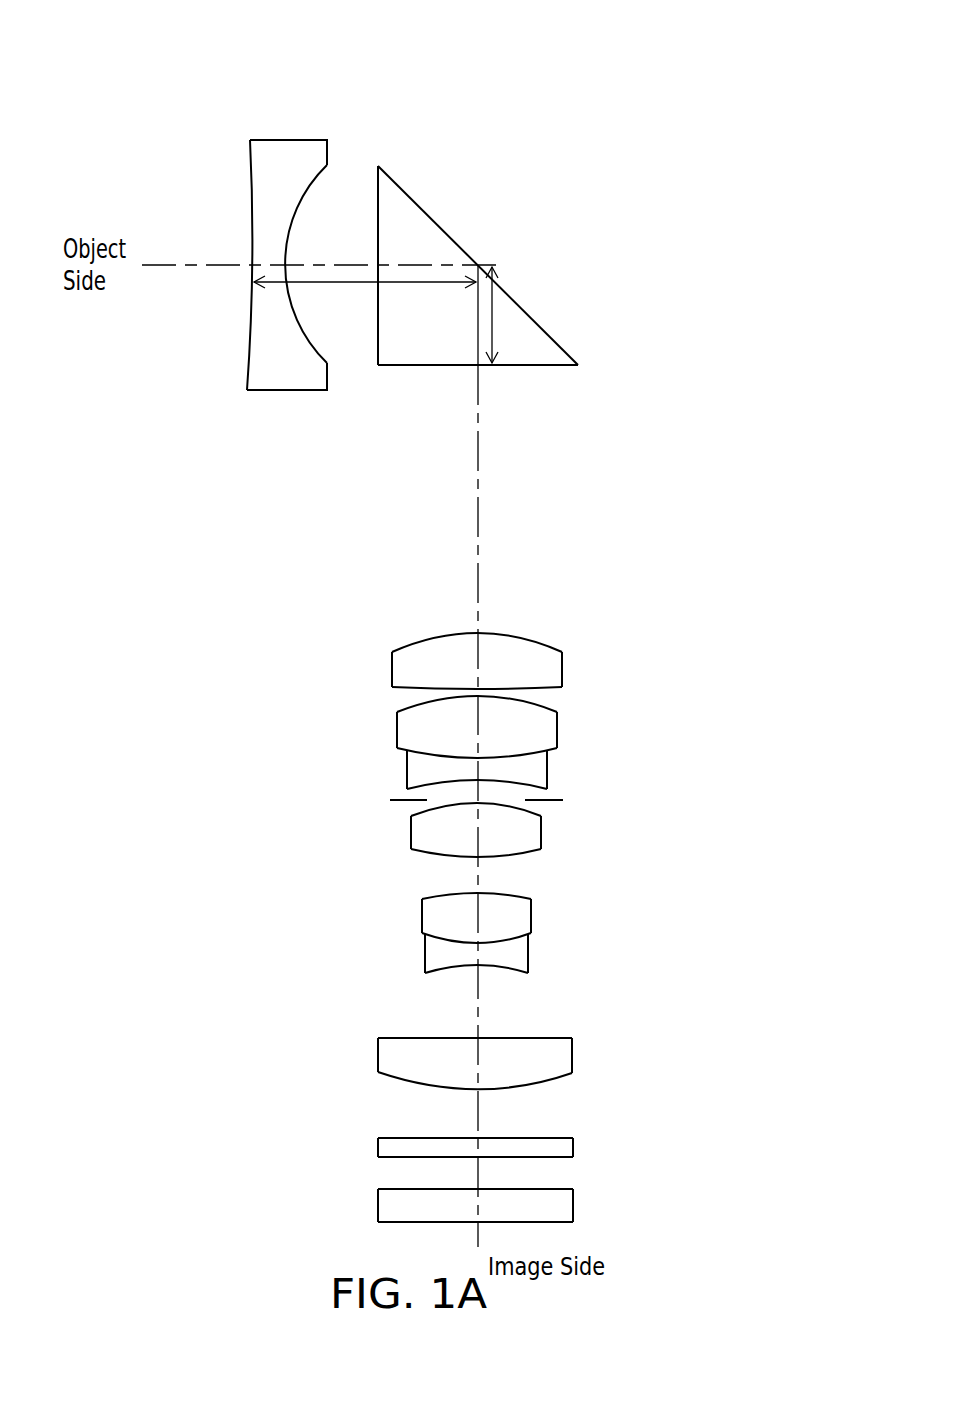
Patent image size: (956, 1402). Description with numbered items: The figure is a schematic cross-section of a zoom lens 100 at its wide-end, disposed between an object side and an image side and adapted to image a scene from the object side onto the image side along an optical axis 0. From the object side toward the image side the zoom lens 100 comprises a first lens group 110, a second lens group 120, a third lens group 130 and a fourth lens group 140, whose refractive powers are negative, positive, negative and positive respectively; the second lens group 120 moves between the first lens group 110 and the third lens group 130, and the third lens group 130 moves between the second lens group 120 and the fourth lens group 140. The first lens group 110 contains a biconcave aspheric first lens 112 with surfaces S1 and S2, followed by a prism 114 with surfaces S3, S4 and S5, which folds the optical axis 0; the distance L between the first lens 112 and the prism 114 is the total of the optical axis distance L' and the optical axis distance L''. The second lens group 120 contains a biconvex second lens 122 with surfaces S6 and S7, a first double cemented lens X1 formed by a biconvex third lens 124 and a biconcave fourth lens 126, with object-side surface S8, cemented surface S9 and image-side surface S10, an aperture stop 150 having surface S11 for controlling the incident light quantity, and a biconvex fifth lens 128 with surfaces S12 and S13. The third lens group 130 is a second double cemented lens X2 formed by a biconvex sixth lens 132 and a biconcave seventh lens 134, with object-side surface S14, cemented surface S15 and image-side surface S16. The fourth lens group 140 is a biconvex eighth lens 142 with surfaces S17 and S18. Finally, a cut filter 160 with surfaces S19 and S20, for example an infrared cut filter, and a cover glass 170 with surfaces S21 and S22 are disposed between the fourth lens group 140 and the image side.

The zoom lens 100 is at (743, 1275).
The first lens group 110 is at (460, 58).
The first lens 112 is at (282, 160).
The prism 114 is at (417, 232).
The second lens group 120 is at (213, 645).
The second lens 122 is at (405, 663).
The third lens 124 is at (412, 722).
The fourth lens 126 is at (423, 770).
The fifth lens 128 is at (431, 832).
The third lens group 130 is at (372, 940).
The sixth lens 132 is at (435, 912).
The seventh lens 134 is at (442, 957).
The fourth lens group 140 is at (429, 1053).
The eighth lens 142 is at (397, 1055).
The aperture stop 150 is at (410, 803).
The cut filter 160 is at (390, 1148).
The cover glass 170 is at (390, 1207).
The optical axis 0 is at (168, 265).
The first double cemented lens X1 is at (258, 677).
The second double cemented lens X2 is at (241, 920).
The distance between the first lens and the prism L is at (373, 381).
The optical axis distance L' is at (365, 364).
The optical axis distance L'' is at (464, 355).
The surface of the first lens S1 is at (248, 170).
The surface of the first lens S2 is at (302, 200).
The surface of the prism S3 is at (377, 221).
The surface of the prism S4 is at (458, 244).
The surface of the prism S5 is at (539, 367).
The surface of the second lens S6 is at (543, 639).
The surface of the second lens S7 is at (554, 690).
The surface of the third lens facing the object side S8 is at (554, 706).
The surface connecting the third lens and the fourth lens S9 is at (554, 755).
The surface of the fourth lens facing the image side S10 is at (521, 786).
The surface of the aperture stop S11 is at (397, 799).
The surface of the fifth lens S12 is at (537, 807).
The surface of the fifth lens S13 is at (527, 853).
The surface of the sixth lens facing the object side S14 is at (519, 896).
The surface connecting the sixth lens and the seventh lens S15 is at (509, 945).
The surface of the seventh lens facing the image side S16 is at (510, 972).
The surface of the eighth lens S17 is at (564, 1036).
The surface of the eighth lens S18 is at (565, 1080).
The surface of the cut filter S19 is at (564, 1136).
The surface of the cut filter S20 is at (564, 1159).
The surface of the cover glass S21 is at (559, 1188).
The surface of the cover glass S22 is at (555, 1224).